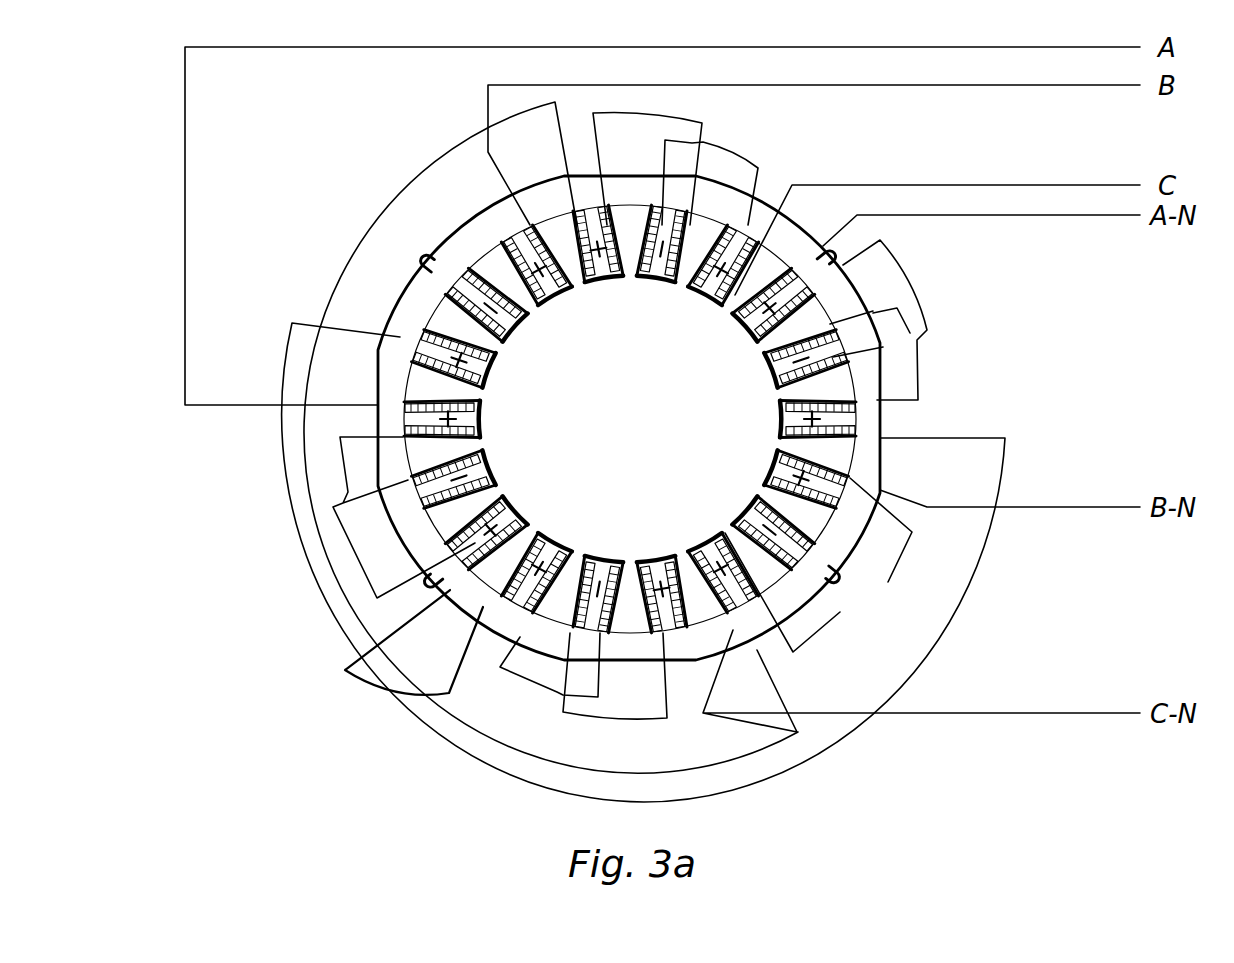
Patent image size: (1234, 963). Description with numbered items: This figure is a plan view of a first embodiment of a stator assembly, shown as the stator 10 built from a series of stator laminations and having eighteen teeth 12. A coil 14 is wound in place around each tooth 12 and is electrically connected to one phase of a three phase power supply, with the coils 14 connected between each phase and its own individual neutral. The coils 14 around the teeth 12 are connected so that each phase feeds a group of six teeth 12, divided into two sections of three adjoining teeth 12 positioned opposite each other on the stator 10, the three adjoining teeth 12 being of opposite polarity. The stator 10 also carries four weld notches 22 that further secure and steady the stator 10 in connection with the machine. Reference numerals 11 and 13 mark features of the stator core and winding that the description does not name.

The stator 10 is at (222, 461).
The stator core segment 11 is at (856, 317).
The tooth 12 is at (485, 304).
The coil winding 13 is at (806, 357).
The coil 14 is at (773, 304).
The weld notch 22 is at (509, 326).